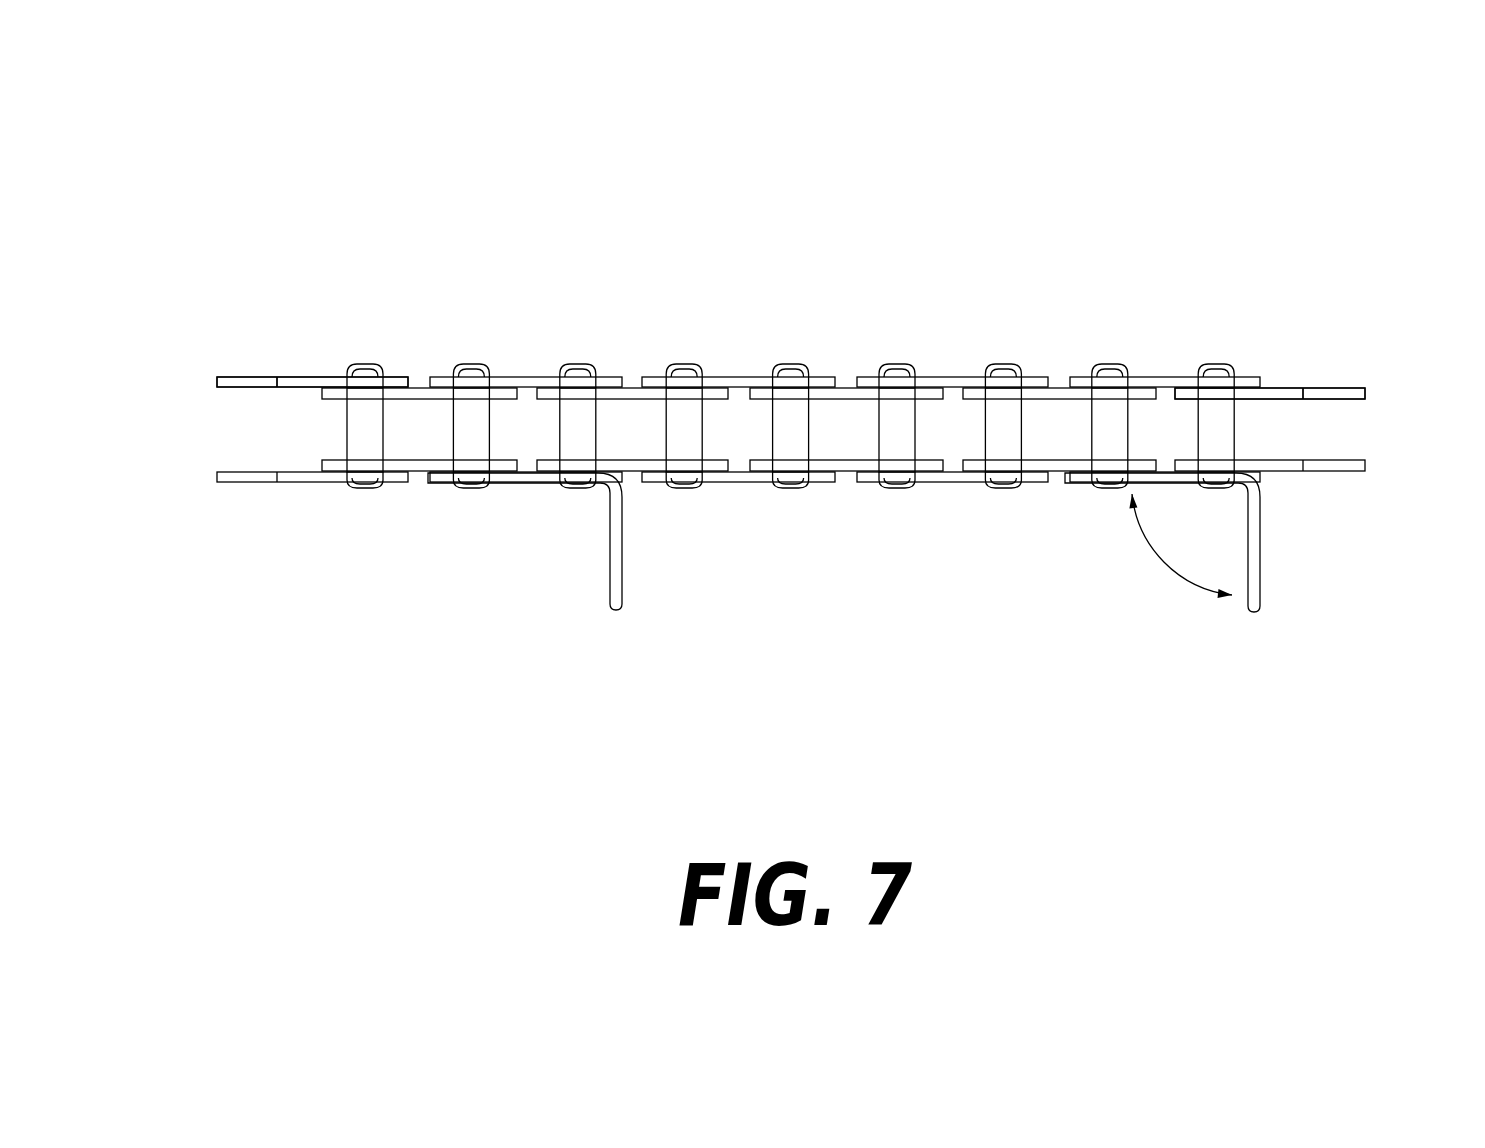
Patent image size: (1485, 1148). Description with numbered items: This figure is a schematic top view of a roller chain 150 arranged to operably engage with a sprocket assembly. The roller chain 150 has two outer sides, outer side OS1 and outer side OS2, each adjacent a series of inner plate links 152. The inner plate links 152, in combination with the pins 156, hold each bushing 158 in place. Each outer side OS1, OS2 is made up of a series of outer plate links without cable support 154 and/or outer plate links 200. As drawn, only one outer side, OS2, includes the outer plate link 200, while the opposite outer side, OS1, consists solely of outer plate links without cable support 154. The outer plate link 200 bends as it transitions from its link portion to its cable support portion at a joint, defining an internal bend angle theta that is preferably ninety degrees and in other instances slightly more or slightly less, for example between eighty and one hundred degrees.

The roller chain 150 is at (1318, 117).
The inner plate link 152 is at (1307, 385).
The outer plate link without cable support 154 is at (310, 375).
The pin 156 is at (793, 365).
The bushing 158 is at (1235, 437).
The outer plate link 200 is at (615, 587).
The outer side OS1 is at (197, 373).
The outer side OS2 is at (197, 475).